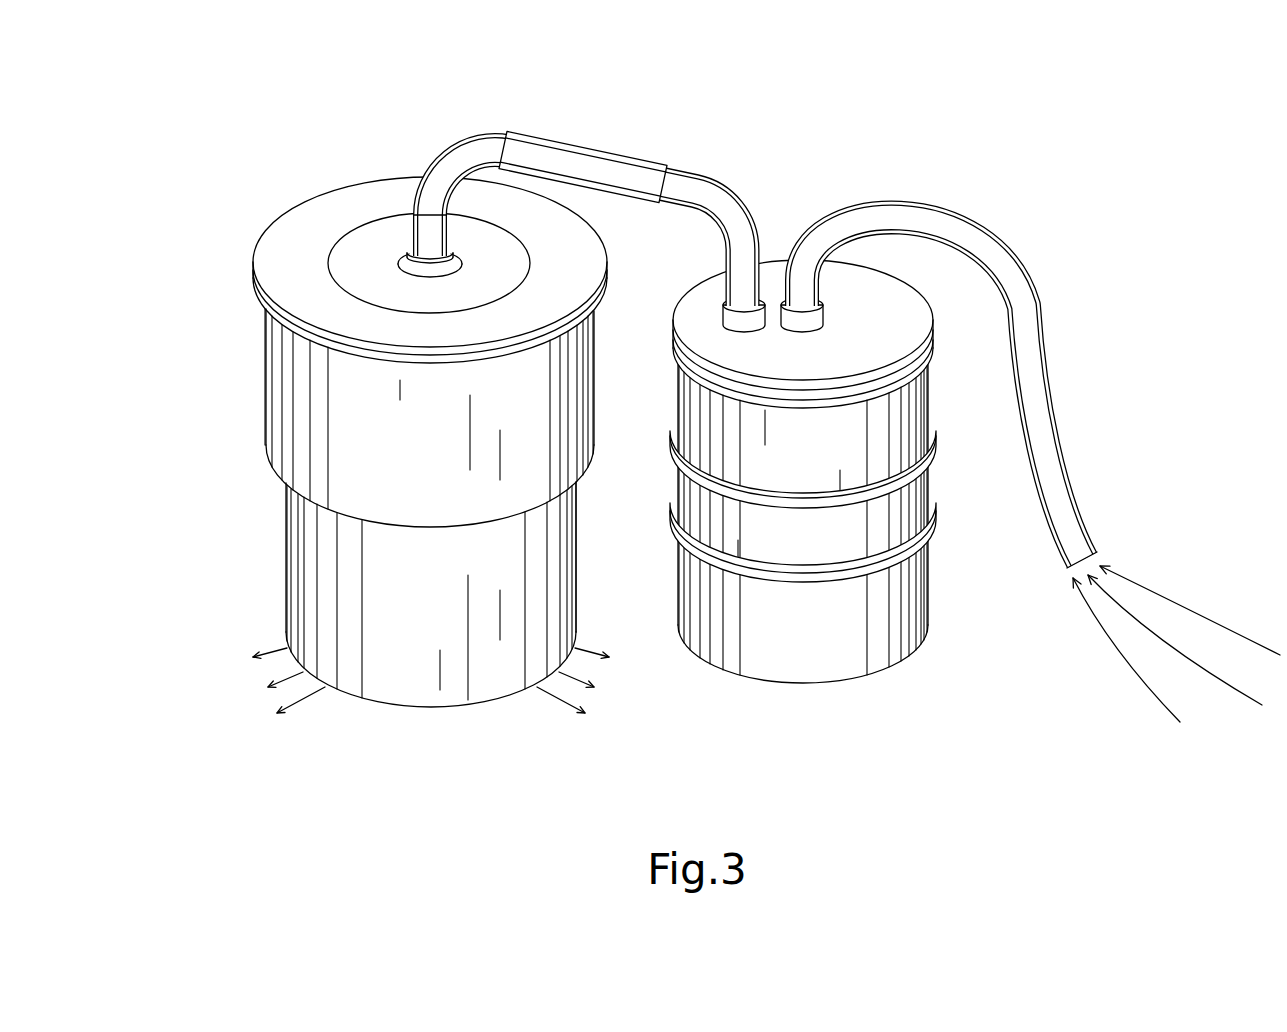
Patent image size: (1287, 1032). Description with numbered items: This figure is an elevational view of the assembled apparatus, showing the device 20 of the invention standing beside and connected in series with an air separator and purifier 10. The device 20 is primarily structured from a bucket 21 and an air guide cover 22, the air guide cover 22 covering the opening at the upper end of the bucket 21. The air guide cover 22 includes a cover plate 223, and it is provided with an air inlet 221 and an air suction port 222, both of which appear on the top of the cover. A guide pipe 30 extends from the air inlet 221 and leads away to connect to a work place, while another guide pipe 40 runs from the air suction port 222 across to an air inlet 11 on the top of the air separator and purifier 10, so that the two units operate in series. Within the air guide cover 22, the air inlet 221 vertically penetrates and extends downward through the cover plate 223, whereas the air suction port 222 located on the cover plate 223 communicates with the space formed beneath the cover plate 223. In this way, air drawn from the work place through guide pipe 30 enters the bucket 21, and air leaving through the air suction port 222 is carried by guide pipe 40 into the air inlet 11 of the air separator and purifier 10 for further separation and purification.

The air separator and purifier 10 is at (248, 597).
The air inlet 11 is at (433, 243).
The pre-filter device 20 is at (861, 518).
The bucket 21 is at (708, 513).
The air guide cover 22 is at (863, 350).
The air inlet 221 is at (800, 324).
The air suction port 222 is at (751, 320).
The cover plate 223 is at (860, 347).
The guide pipe 30 is at (1078, 437).
The guide pipe 40 is at (599, 145).